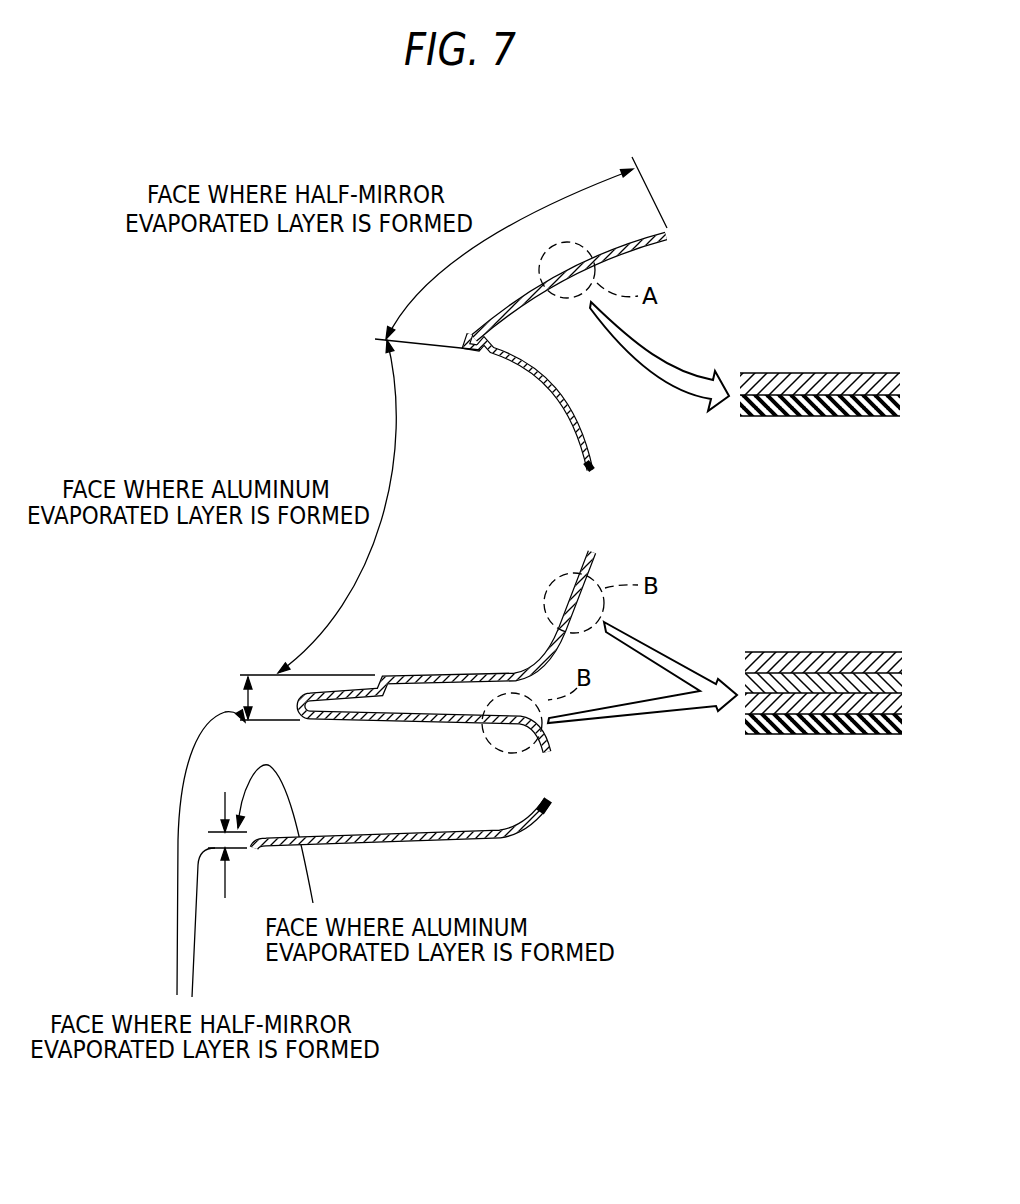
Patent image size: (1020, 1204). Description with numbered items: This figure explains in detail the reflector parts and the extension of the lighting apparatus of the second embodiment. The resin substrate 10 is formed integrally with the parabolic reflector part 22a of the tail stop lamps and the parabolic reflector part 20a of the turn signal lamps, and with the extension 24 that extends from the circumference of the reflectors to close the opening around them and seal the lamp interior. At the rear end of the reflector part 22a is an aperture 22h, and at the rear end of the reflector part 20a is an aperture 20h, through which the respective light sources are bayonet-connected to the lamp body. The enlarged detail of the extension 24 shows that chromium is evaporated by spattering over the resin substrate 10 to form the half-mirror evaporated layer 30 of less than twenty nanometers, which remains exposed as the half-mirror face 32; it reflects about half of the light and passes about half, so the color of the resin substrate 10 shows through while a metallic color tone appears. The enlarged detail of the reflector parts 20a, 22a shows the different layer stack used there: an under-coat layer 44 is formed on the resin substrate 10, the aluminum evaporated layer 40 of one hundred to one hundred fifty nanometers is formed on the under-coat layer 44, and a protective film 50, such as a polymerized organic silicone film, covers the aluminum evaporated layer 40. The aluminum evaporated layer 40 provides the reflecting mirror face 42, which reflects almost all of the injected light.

The resin substrate 10 is at (583, 420).
The extension 24 is at (622, 234).
The reflector part of the tail stop lamps 22a is at (568, 440).
The aperture 22h is at (594, 475).
The reflector part of the turn signal lamps 20a is at (472, 827).
The aperture 20h is at (550, 800).
The half-mirror evaporated layer 30 is at (852, 378).
The half-mirror face 32 is at (776, 375).
The aluminum evaporated layer 40 is at (878, 658).
The reflecting mirror face 42 is at (770, 660).
The under-coat layer 44 is at (884, 736).
The protective film 50 is at (828, 662).